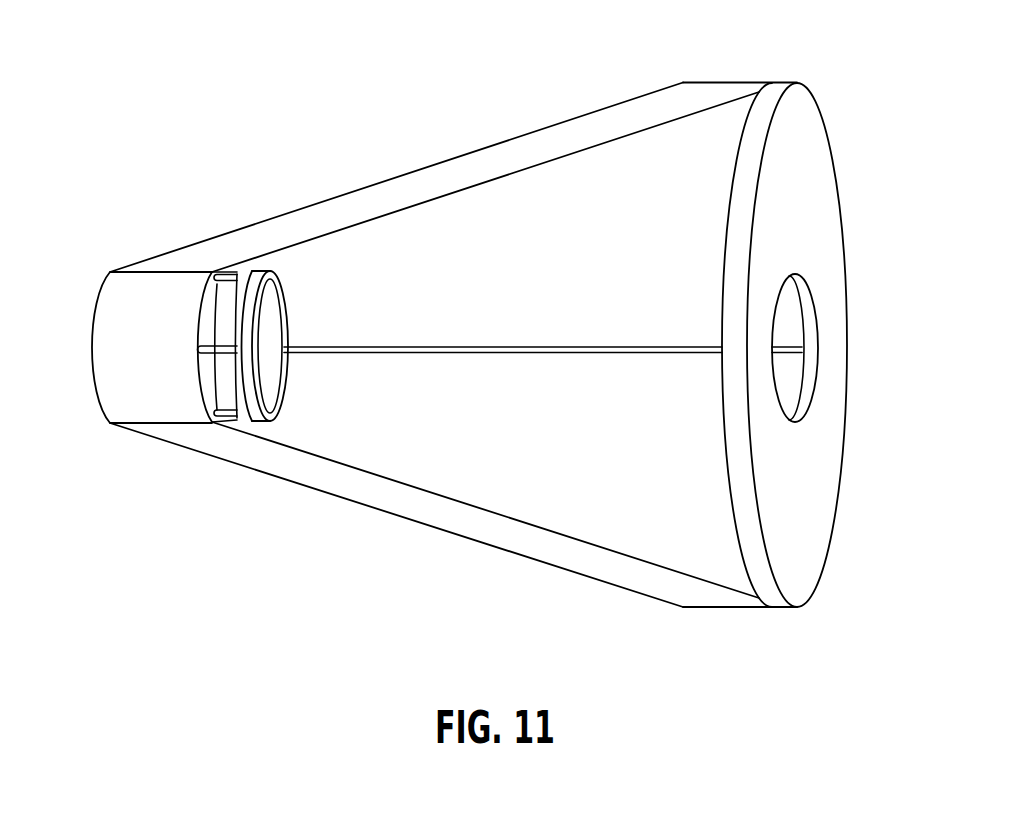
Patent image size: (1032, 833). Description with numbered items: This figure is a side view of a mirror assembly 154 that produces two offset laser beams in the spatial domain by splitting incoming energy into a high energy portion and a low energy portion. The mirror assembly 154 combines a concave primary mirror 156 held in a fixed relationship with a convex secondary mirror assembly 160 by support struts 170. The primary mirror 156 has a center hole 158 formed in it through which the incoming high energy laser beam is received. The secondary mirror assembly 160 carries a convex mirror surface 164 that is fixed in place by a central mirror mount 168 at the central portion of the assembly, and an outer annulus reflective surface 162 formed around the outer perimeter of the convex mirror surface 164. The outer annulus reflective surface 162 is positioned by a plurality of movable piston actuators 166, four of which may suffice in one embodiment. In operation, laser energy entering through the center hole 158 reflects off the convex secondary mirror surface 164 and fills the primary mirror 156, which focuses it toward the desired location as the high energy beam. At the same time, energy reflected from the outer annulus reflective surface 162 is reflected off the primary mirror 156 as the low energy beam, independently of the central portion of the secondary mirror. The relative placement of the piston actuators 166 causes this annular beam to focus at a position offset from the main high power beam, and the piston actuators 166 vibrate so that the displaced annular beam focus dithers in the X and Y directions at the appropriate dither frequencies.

The mirror assembly 154 is at (328, 70).
The concave primary mirror 156 is at (823, 490).
The center hole 158 is at (787, 372).
The convex secondary mirror assembly 160 is at (113, 398).
The outer annulus reflective surface 162 is at (277, 275).
The convex mirror surface 164 is at (272, 337).
The piston actuators 166 is at (233, 273).
The central mirror mount 168 is at (223, 327).
The support struts 170 is at (417, 172).